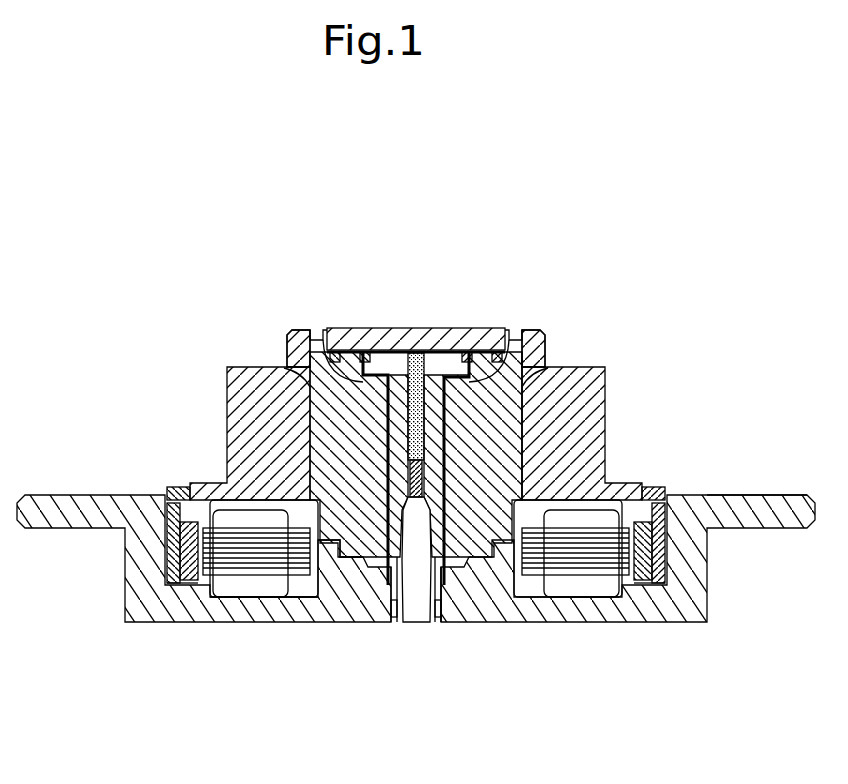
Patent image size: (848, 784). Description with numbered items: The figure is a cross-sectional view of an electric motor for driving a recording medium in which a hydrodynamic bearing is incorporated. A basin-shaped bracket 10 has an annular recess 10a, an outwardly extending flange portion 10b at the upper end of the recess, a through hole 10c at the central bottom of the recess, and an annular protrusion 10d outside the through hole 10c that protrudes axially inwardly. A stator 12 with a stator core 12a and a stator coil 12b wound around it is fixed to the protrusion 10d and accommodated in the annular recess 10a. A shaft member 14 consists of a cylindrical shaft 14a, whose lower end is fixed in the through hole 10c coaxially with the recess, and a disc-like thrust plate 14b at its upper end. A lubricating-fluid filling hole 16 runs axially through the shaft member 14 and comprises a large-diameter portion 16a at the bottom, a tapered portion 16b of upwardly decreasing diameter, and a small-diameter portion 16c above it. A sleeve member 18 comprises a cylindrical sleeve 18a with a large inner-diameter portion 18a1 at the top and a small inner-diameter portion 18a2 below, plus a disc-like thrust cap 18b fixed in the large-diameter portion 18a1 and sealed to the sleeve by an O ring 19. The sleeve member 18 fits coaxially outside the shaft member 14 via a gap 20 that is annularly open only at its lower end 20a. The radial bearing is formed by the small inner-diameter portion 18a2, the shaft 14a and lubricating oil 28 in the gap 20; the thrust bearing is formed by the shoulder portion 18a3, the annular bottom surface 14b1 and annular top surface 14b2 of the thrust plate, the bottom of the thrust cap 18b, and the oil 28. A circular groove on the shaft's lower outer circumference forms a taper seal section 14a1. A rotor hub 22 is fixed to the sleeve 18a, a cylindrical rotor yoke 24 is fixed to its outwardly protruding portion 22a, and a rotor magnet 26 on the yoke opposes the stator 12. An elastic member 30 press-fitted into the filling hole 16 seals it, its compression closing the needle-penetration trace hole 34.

The bracket 10 is at (530, 600).
The annular recess 10a is at (663, 600).
The outwardly extending flange portion 10b is at (762, 533).
The through hole 10c is at (390, 600).
The annular protrusion 10d is at (308, 600).
The stator 12 is at (633, 515).
The stator core 12a is at (585, 575).
The stator coil 12b is at (610, 575).
The shaft member 14 is at (485, 585).
The cylindrical shaft 14a is at (543, 463).
The taper seal section 14a1 is at (395, 563).
The thrust plate 14b is at (462, 347).
The annular bottom surface 14b1 is at (287, 372).
The annular top surface 14b2 is at (407, 327).
The lubricating-fluid filling hole 16 is at (418, 600).
The large-diameter portion 16a is at (424, 600).
The tapered portion 16b is at (410, 600).
The small-diameter portion 16c is at (430, 340).
The sleeve member 18 is at (367, 328).
The sleeve 18a is at (297, 362).
The large inner-diameter portion 18a1 is at (345, 352).
The small inner-diameter portion 18a2 is at (390, 483).
The shoulder portion 18a3 is at (548, 390).
The thrust cap 18b is at (387, 337).
The O ring 19 is at (541, 355).
The gap 20 is at (597, 420).
The lower end 20a is at (462, 598).
The rotor hub 22 is at (227, 410).
The outwardly protruding portion 22a is at (185, 490).
The rotor yoke 24 is at (197, 557).
The rotor magnet 26 is at (180, 595).
The lubricating oil 28 is at (315, 368).
The elastic member 30 is at (348, 560).
The hole as the trace of the needle penetration 34 is at (560, 462).